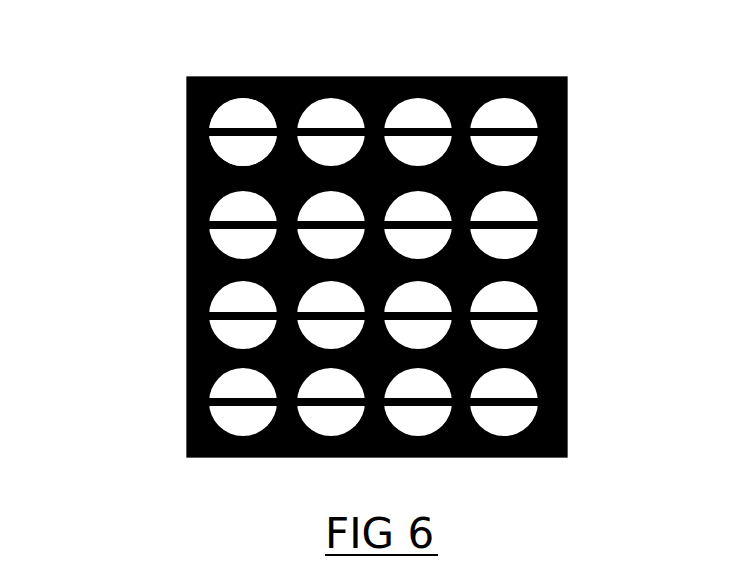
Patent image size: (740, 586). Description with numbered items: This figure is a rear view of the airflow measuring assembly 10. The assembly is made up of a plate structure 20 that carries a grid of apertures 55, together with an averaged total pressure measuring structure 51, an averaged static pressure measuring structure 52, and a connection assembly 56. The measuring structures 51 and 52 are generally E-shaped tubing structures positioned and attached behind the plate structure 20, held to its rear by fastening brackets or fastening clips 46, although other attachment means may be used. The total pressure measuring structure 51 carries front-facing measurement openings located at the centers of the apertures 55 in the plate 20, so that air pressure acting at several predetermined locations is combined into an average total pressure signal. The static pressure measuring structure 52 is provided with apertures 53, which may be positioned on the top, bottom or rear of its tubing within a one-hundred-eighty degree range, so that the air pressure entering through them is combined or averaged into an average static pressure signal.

The airflow measuring assembly 10 is at (152, 222).
The plate structure 20 is at (566, 90).
The fastening clips 46 is at (289, 130).
The total pressure measuring structure 51 is at (548, 194).
The static pressure measuring structure 52 is at (197, 312).
The apertures 53 is at (387, 153).
The apertures 55 is at (250, 100).
The connection assembly 56 is at (548, 252).